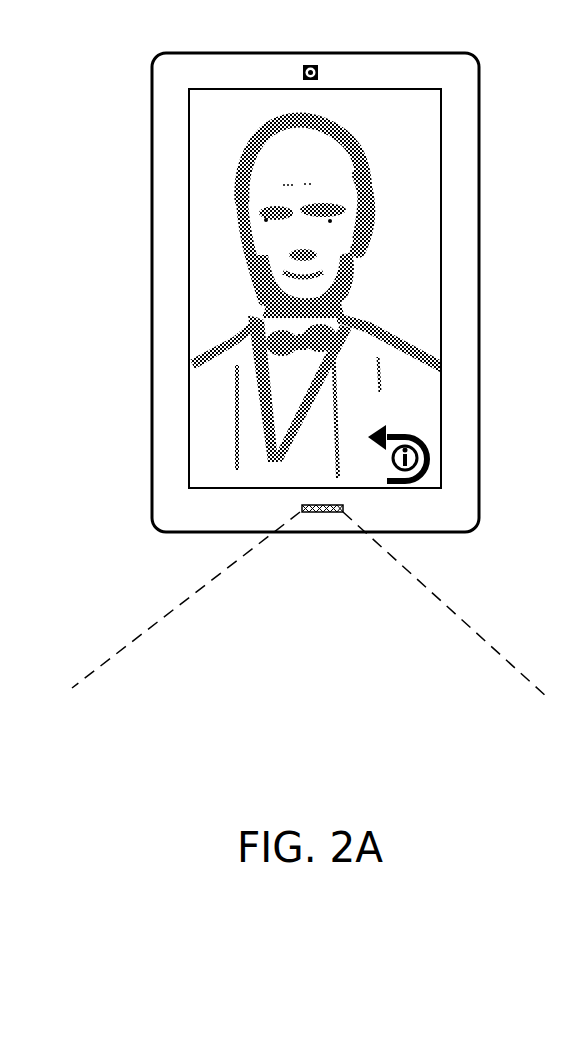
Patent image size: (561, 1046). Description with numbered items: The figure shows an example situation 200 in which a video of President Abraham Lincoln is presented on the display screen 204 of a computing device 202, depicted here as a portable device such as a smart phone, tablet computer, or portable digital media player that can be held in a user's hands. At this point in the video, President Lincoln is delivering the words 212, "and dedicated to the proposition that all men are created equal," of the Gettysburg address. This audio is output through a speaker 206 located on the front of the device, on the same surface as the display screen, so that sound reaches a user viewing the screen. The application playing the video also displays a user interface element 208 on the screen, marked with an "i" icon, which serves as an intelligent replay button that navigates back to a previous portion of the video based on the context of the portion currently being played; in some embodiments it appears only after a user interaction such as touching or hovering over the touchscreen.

The example situation 200 is at (517, 165).
The computing device 202 is at (152, 131).
The display screen 204 is at (190, 426).
The speaker 206 is at (302, 505).
The user interface element 208 is at (437, 453).
The words 212 is at (143, 690).